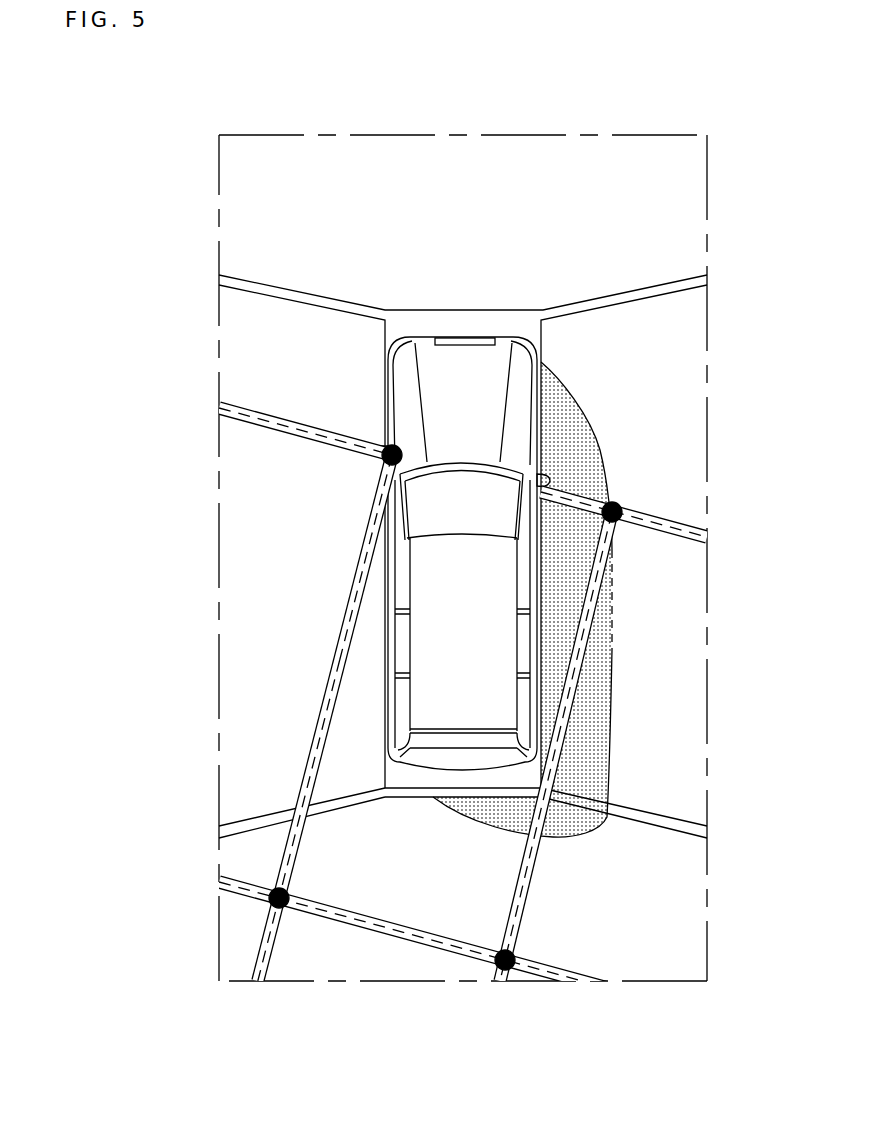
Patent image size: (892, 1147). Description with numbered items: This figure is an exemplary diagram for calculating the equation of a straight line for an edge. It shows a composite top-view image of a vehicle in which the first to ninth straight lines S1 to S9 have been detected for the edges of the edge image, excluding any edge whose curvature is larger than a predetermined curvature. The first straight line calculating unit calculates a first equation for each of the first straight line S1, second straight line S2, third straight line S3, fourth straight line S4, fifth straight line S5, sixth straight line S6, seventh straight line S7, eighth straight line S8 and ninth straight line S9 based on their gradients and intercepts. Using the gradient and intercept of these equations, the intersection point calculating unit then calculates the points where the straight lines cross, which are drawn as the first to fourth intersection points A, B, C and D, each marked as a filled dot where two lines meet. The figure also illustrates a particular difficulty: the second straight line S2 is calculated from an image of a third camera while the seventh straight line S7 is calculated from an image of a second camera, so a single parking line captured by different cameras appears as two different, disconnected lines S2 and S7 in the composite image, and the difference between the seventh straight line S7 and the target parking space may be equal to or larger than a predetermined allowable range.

The first straight line S1 is at (293, 425).
The second straight line S2 is at (350, 639).
The third straight line S3 is at (607, 490).
The fourth straight line S4 is at (672, 526).
The fifth straight line S5 is at (587, 608).
The sixth straight line S6 is at (612, 657).
The seventh straight line S7 is at (288, 856).
The eighth straight line S8 is at (387, 930).
The ninth straight line S9 is at (530, 871).
The first intersection point A is at (387, 458).
The second intersection point B is at (620, 506).
The third intersection point C is at (287, 907).
The fourth intersection point D is at (508, 970).